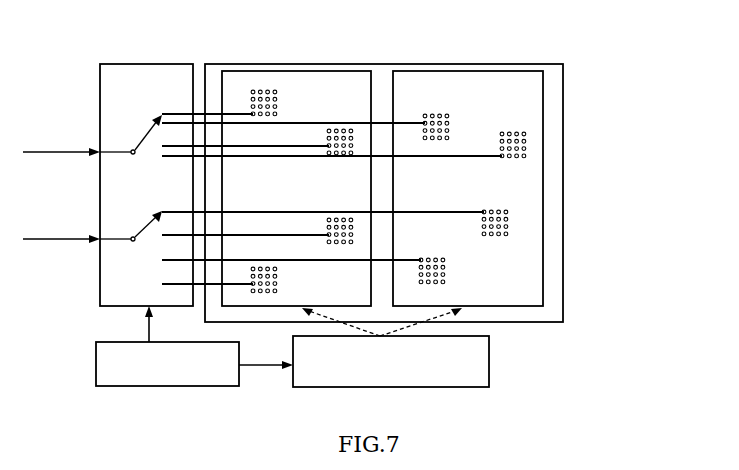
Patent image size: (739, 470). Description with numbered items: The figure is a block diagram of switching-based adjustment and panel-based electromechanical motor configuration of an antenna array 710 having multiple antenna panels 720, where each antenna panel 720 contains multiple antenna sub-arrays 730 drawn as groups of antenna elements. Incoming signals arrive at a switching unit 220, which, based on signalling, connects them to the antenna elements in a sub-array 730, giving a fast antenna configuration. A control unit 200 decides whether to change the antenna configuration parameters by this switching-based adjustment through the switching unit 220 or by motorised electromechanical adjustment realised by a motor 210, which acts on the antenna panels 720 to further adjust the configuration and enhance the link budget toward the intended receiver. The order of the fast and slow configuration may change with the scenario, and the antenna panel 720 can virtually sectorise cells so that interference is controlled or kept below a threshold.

The switching unit 220 is at (120, 64).
The antenna array 710 is at (563, 98).
The antenna panel 720 is at (543, 141).
The antenna sub-array 730 is at (506, 227).
The control unit 200 is at (167, 364).
The motor 210 is at (391, 361).